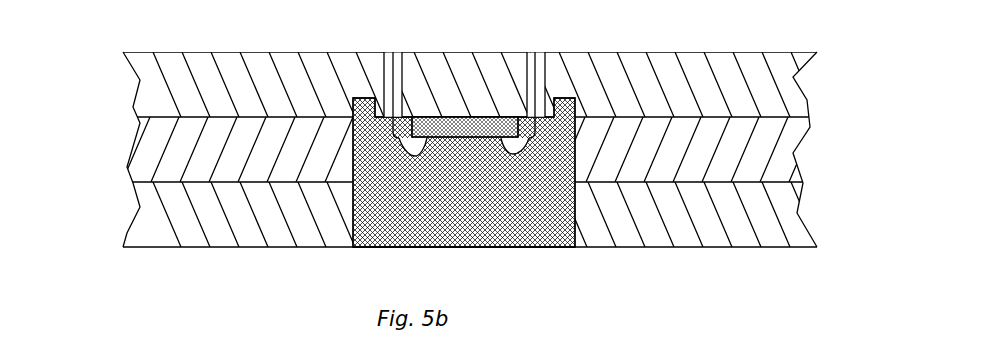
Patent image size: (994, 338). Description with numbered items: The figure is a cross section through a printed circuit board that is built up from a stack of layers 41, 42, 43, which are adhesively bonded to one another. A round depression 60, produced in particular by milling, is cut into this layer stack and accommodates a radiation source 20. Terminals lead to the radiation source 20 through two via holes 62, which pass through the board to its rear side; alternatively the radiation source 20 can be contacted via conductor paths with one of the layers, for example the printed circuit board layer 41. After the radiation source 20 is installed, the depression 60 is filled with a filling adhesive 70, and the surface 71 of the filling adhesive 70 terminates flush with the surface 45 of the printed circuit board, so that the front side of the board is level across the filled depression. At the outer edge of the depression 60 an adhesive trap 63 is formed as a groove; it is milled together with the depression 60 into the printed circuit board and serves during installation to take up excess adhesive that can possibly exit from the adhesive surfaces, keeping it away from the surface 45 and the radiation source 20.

The printed circuit board layer 41 is at (180, 75).
The printed circuit board layer 42 is at (178, 153).
The printed circuit board layer 43 is at (178, 240).
The surface of the printed circuit board 45 is at (613, 248).
The depression 60 is at (391, 196).
The filling adhesive 70 is at (423, 215).
The surface of the filling adhesive 71 is at (497, 248).
The radiation source 20 is at (452, 118).
The via hole 62 is at (392, 100).
The adhesive trap 63 is at (558, 98).